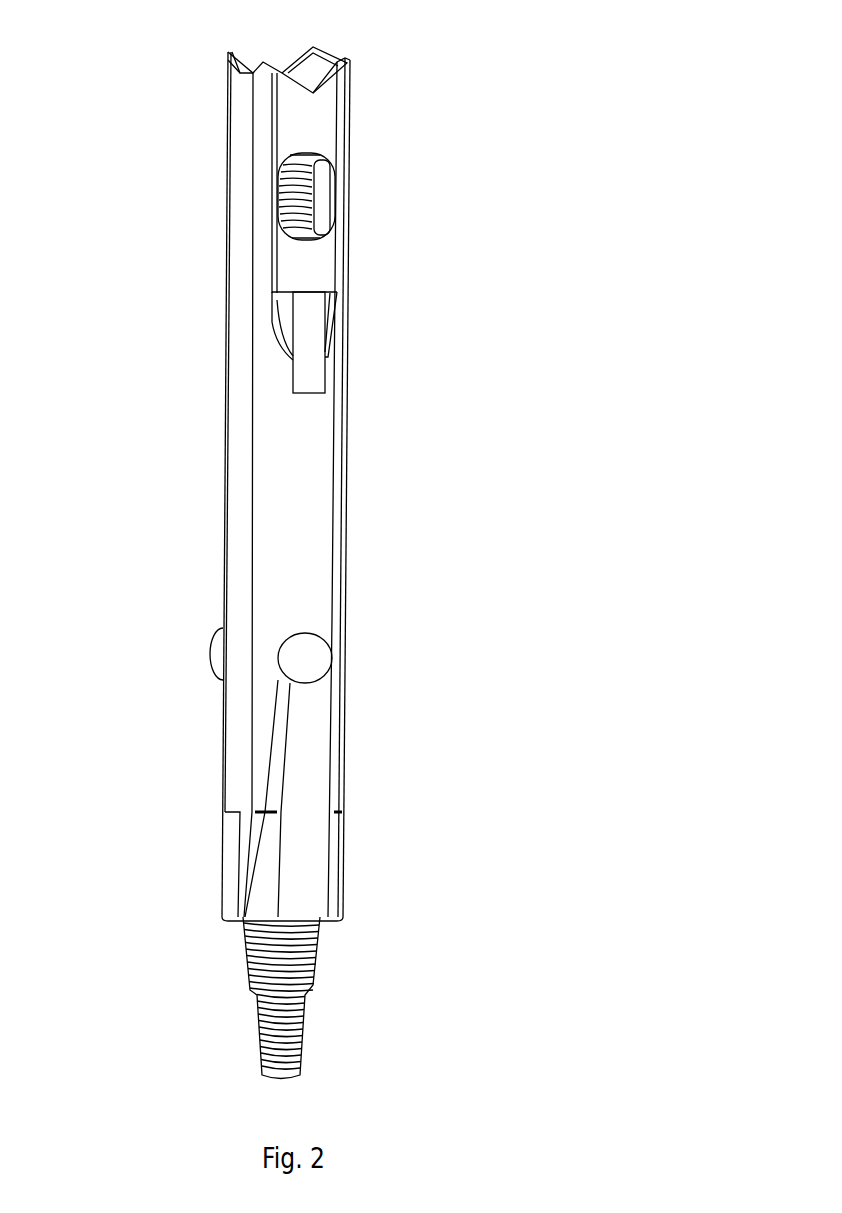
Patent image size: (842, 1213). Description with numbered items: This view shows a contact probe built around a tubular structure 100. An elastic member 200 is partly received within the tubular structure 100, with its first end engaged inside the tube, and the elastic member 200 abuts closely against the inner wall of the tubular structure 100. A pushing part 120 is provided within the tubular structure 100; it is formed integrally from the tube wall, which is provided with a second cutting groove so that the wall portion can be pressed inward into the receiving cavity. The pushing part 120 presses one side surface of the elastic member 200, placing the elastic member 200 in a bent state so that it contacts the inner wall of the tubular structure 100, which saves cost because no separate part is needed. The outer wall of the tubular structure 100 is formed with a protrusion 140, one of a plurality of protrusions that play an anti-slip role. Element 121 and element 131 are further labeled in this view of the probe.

The tubular structure 100 is at (257, 483).
The pushing part 120 is at (302, 339).
The hook portion of latch 121 is at (270, 323).
The spring / coil element 131 is at (337, 208).
The protrusion 140 is at (307, 665).
The elastic member 200 is at (282, 938).